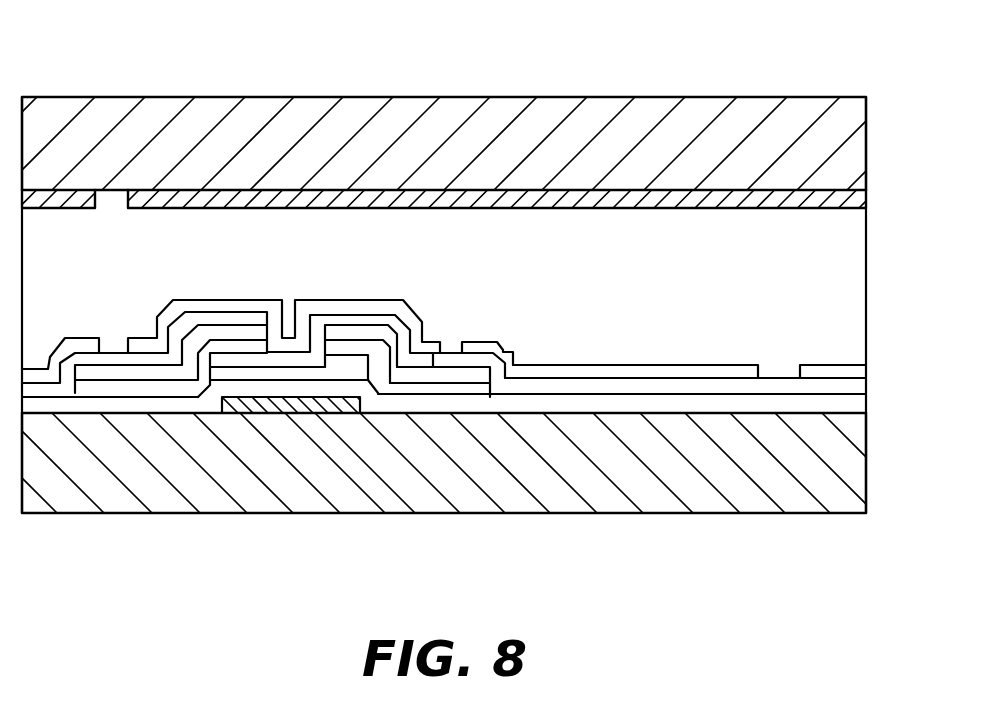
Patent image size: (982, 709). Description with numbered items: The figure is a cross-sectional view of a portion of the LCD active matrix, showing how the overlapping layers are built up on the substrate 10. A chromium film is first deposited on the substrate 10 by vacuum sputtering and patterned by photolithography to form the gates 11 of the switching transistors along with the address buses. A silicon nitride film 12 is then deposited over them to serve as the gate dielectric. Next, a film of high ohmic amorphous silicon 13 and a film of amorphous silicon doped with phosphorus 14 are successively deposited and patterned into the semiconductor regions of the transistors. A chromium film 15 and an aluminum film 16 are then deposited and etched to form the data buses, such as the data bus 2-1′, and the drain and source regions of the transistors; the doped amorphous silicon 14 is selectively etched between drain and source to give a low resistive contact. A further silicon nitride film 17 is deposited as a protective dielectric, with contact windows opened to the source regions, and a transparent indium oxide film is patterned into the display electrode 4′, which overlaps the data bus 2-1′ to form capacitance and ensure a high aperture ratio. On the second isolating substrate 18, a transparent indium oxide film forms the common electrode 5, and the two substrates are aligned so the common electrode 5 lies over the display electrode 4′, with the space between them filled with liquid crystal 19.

The second isolating substrate 18 is at (107, 113).
The liquid crystal 19 is at (282, 222).
The common electrode 5 is at (480, 185).
The data bus 2-1′ is at (104, 375).
The high ohmic amorphous silicon film 13 is at (239, 375).
The phosphorus-doped amorphous silicon film 14 is at (347, 362).
The chromium film 15 is at (472, 392).
The display electrode 4′ is at (643, 372).
The substrate 10 is at (172, 465).
The gate 11 is at (318, 405).
The aluminum film 16 is at (405, 380).
The silicon nitride film 12 is at (765, 402).
The silicon nitride film 17 is at (843, 383).